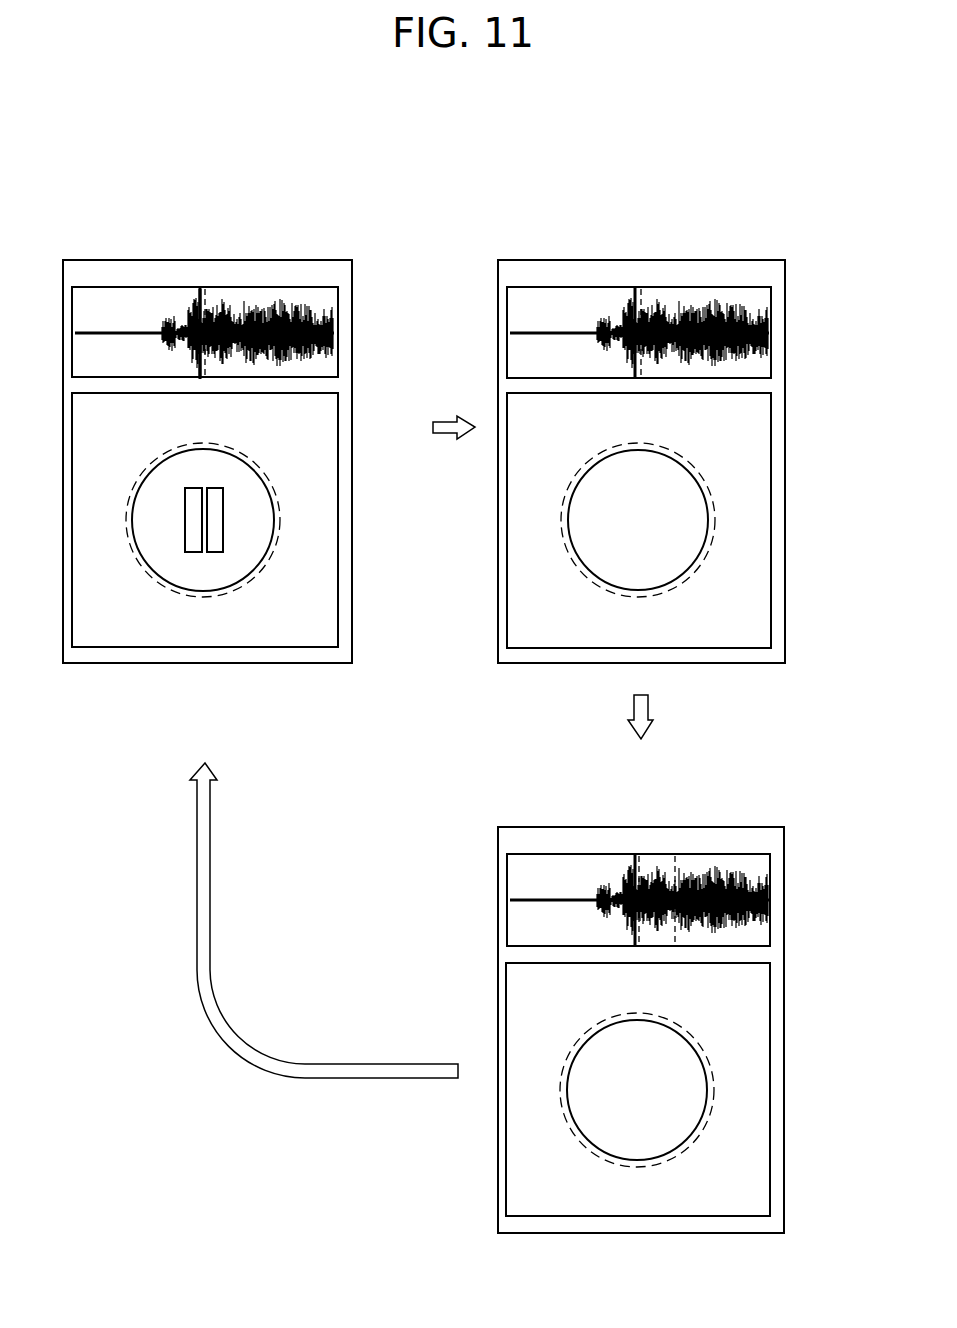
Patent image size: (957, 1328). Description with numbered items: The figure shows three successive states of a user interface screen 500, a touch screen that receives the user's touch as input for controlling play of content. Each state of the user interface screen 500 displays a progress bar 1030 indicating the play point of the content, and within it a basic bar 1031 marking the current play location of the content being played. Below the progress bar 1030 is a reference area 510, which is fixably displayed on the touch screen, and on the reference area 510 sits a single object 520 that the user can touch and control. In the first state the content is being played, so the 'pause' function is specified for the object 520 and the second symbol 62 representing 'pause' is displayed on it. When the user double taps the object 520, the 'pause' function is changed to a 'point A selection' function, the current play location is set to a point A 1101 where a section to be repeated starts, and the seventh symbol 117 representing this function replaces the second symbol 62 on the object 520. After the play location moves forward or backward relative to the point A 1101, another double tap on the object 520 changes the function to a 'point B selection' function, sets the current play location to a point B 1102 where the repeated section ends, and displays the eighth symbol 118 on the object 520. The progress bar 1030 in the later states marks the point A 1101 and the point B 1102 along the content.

The user interface screen 500 is at (338, 420).
The progress bar 1030 is at (340, 306).
The basic bar 1031 is at (210, 297).
The reference area 510 is at (280, 505).
The object 520 is at (275, 535).
The second symbol 62 is at (217, 488).
The point A 1101 is at (645, 300).
The point B 1102 is at (677, 870).
The seventh symbol 117 is at (650, 507).
The eighth symbol 118 is at (660, 1068).